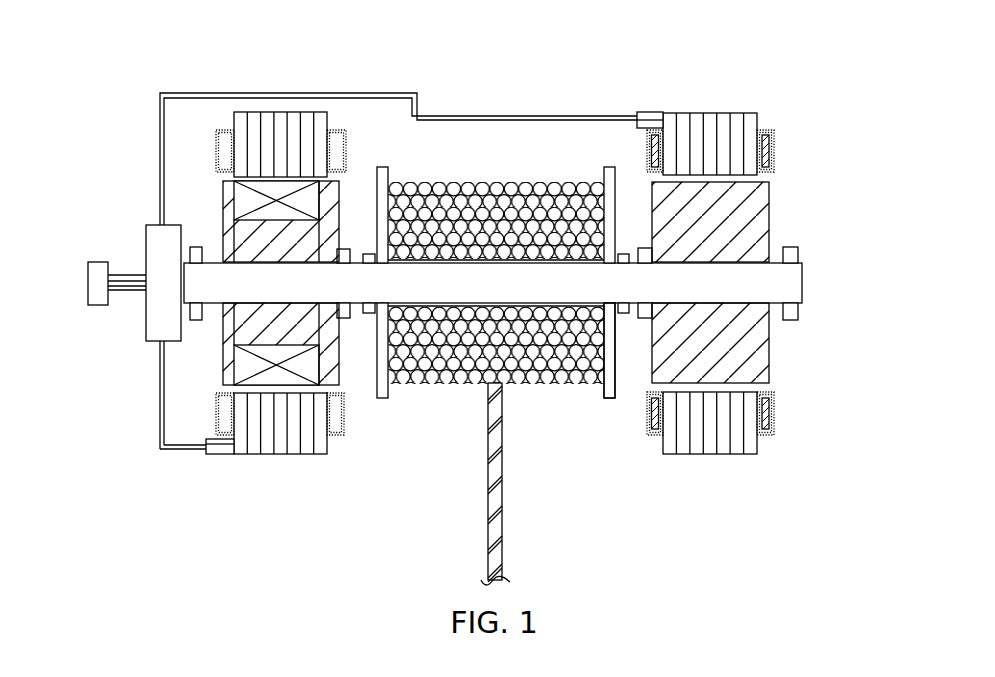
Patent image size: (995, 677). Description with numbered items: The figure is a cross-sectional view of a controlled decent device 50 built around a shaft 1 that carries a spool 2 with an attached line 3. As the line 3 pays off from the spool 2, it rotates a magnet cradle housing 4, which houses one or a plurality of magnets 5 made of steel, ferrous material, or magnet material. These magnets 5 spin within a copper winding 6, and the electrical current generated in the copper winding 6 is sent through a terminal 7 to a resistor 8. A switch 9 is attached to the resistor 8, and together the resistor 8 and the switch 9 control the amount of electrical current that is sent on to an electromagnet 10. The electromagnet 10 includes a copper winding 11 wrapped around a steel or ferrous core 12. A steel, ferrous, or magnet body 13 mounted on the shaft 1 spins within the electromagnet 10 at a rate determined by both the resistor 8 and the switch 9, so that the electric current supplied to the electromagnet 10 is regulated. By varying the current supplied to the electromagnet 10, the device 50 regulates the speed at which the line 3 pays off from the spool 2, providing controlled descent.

The shaft 1 is at (795, 285).
The spool 2 is at (608, 395).
The line 3 is at (438, 387).
The magnet cradle housing 4 is at (230, 337).
The magnets 5 is at (240, 200).
The copper winding 6 is at (280, 446).
The terminal 7 is at (220, 455).
The resistor 8 is at (153, 322).
The switch 9 is at (95, 282).
The electromagnet 10 is at (750, 93).
The copper winding 11 is at (710, 447).
The core 12 is at (771, 417).
The magnet body 13 is at (760, 223).
The controlled decent device 50 is at (566, 74).